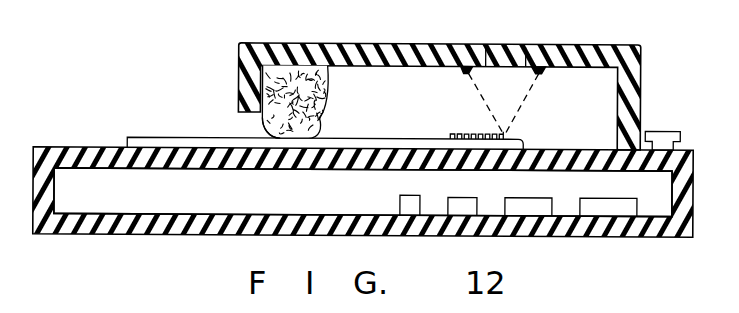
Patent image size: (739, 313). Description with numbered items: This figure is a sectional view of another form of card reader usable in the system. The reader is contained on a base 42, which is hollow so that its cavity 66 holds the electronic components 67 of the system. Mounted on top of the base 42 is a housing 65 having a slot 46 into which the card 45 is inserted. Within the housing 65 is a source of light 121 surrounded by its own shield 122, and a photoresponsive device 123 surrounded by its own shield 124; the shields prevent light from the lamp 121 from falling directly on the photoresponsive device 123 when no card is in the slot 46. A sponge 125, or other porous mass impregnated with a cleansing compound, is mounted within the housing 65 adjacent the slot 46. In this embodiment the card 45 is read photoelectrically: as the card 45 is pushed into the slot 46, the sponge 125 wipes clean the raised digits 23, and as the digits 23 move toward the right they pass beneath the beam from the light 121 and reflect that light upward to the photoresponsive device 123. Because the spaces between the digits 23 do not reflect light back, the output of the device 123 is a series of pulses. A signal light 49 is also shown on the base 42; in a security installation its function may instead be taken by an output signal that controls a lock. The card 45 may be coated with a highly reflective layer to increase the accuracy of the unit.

The base 42 is at (98, 237).
The cavity 66 is at (258, 198).
The electronic components 67 is at (465, 205).
The card 45 is at (168, 140).
The housing 65 is at (358, 52).
The sponge 125 is at (318, 112).
The slot 46 is at (263, 130).
The source of light 121 is at (467, 74).
The shield 122 is at (485, 47).
The photoresponsive device 123 is at (539, 74).
The shield 124 is at (525, 47).
The raised digits 23 is at (448, 136).
The signal light 49 is at (680, 135).